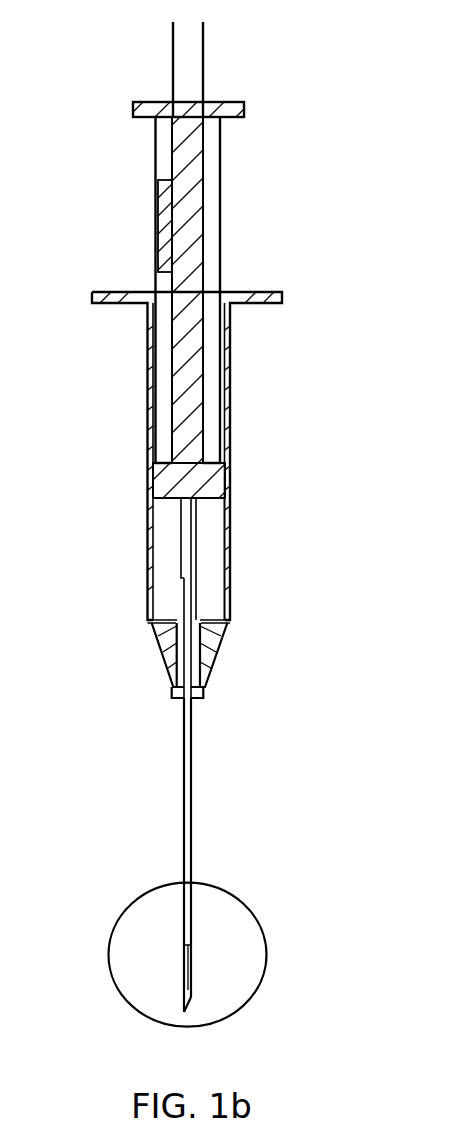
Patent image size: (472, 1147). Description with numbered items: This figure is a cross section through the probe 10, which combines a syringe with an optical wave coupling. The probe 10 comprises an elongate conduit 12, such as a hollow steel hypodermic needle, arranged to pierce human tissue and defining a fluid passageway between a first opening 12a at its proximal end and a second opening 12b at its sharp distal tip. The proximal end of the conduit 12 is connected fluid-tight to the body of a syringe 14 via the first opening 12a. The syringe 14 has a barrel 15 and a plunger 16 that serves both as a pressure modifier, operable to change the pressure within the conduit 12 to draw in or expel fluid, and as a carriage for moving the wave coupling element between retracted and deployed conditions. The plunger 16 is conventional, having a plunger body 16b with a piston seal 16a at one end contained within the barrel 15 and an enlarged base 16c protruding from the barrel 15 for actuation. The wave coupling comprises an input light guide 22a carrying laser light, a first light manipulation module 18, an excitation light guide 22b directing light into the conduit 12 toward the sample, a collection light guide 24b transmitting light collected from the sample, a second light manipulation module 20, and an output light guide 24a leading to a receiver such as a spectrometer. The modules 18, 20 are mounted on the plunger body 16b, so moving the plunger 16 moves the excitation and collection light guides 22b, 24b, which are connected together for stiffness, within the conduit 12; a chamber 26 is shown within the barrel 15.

The probe 10 is at (326, 100).
The elongate conduit 12 is at (195, 803).
The first opening 12a is at (172, 698).
The second opening 12b is at (193, 1005).
The syringe 14 is at (232, 472).
The barrel 15 is at (231, 560).
The plunger 16 is at (222, 213).
The piston seal 16a is at (173, 485).
The plunger body 16b is at (188, 272).
The enlarged base 16c is at (141, 118).
The first light manipulation module 18 is at (159, 231).
The second light manipulation module 20 is at (159, 231).
The input light guide 22a is at (172, 60).
The excitation light guide 22b is at (181, 538).
The output light guide 24a is at (204, 55).
The collection light guide 24b is at (197, 509).
The fluid chamber 26 is at (211, 600).